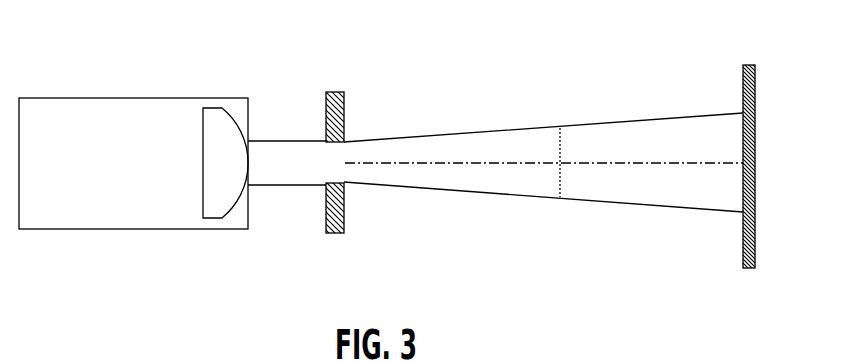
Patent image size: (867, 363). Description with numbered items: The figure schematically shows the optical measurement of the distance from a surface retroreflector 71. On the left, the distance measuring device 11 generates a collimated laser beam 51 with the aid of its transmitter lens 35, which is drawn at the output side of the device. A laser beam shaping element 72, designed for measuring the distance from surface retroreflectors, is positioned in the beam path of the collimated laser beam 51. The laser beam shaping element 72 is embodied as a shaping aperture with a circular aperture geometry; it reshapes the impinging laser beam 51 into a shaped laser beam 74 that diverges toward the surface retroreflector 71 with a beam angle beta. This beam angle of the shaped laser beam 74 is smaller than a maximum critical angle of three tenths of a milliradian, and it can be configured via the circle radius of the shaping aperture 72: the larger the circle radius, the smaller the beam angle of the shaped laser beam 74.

The distance measuring device 11 is at (94, 88).
The transmitter lens 35 is at (217, 122).
The collimated laser beam 51 is at (283, 139).
The laser beam shaping element 72 is at (334, 91).
The shaped laser beam 74 is at (631, 121).
The surface retroreflector 71 is at (756, 72).